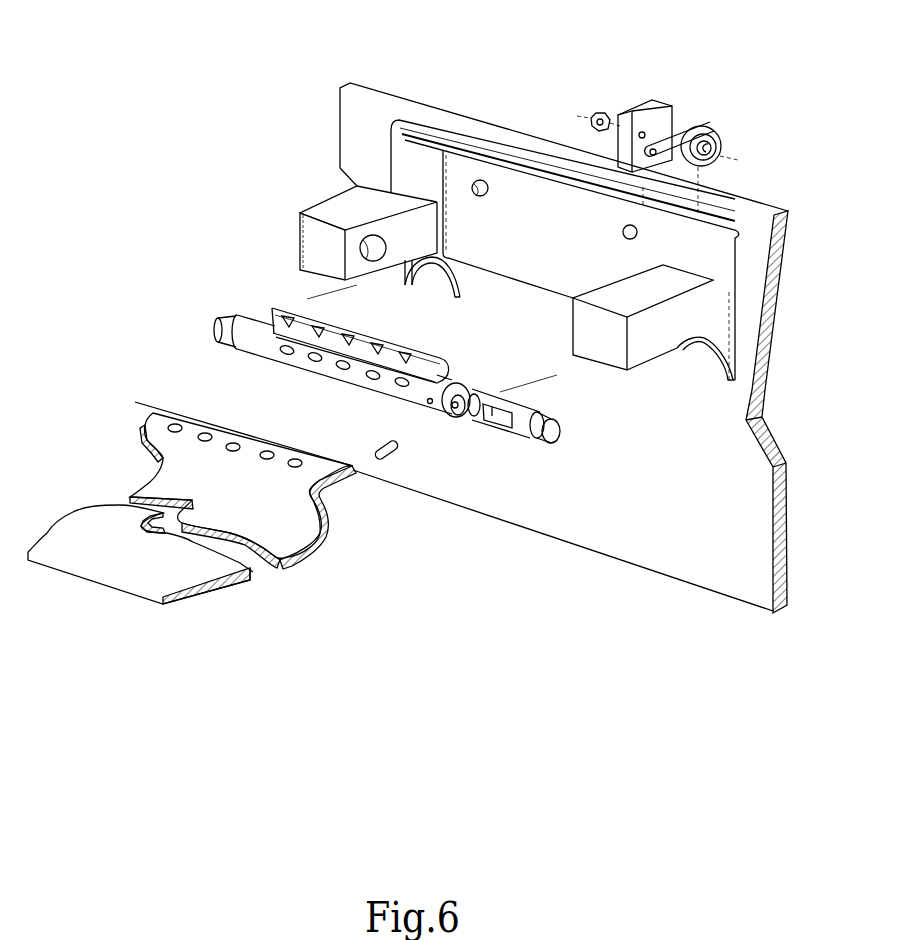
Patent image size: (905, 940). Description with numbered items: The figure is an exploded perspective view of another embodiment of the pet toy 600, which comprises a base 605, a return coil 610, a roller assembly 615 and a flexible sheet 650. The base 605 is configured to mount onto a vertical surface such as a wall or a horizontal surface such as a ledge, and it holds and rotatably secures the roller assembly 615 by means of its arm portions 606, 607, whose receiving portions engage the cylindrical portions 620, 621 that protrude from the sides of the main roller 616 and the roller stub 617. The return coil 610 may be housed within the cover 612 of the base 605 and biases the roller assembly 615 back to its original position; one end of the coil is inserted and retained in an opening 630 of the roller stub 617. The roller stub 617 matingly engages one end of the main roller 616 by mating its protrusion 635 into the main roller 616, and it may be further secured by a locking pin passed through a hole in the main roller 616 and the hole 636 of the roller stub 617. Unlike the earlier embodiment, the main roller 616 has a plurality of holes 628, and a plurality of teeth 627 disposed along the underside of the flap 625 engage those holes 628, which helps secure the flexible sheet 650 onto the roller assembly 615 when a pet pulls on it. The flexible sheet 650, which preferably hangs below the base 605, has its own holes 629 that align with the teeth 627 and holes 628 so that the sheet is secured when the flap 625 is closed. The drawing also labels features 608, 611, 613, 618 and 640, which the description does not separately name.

The pet toy 600 is at (218, 50).
The base 605 is at (546, 239).
The arm portion 606 is at (342, 198).
The arm portion 607 is at (643, 365).
The aperture 608 is at (363, 247).
The return coil 610 is at (733, 123).
The torsion spring 611 is at (708, 128).
The cover 612 is at (667, 103).
The nut 613 is at (600, 112).
The roller assembly 615 is at (173, 267).
The main roller 616 is at (234, 354).
The roller stub 617 is at (508, 435).
The pin 618 is at (392, 448).
The cylindrical portion 620 is at (215, 327).
The cylindrical portion 621 is at (540, 443).
The flap 625 is at (448, 357).
The teeth 627 is at (318, 335).
The holes 628 is at (400, 385).
The holes 629 is at (177, 425).
The opening 630 is at (518, 398).
The protrusion 635 is at (430, 403).
The hole 636 is at (455, 408).
The hole 640 is at (481, 184).
The flexible sheet 650 is at (155, 412).